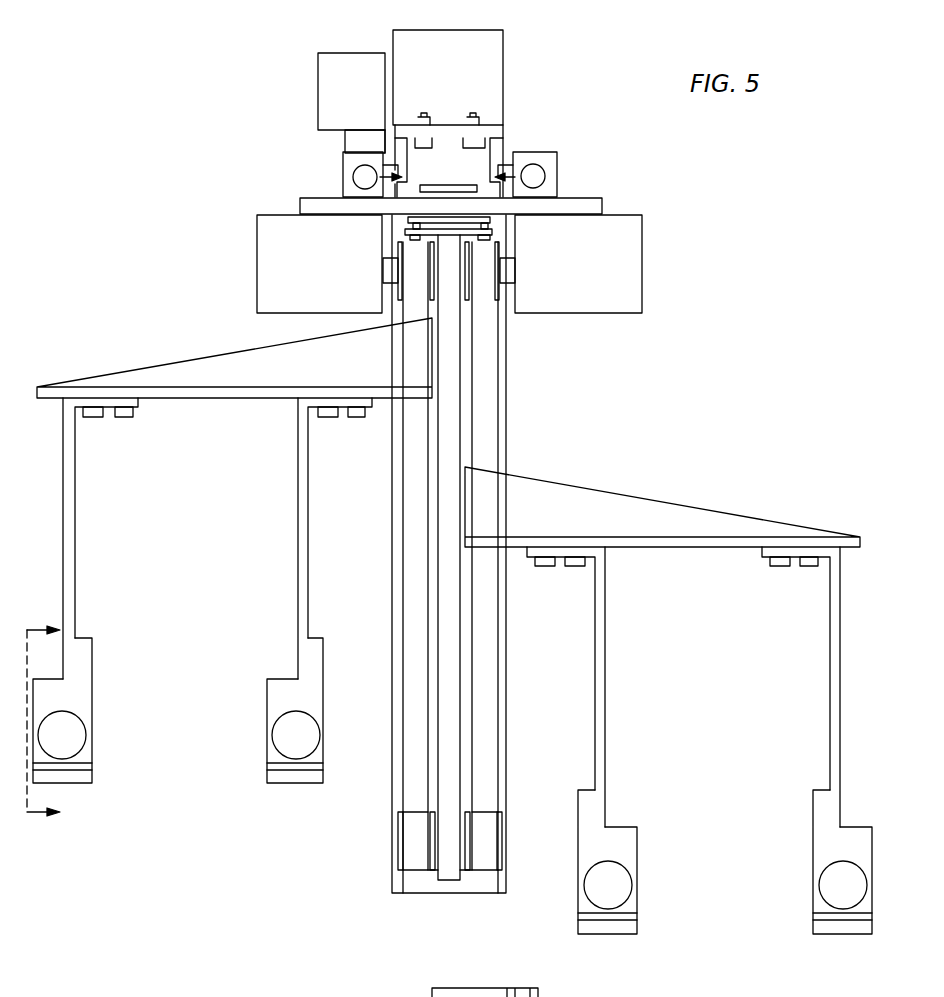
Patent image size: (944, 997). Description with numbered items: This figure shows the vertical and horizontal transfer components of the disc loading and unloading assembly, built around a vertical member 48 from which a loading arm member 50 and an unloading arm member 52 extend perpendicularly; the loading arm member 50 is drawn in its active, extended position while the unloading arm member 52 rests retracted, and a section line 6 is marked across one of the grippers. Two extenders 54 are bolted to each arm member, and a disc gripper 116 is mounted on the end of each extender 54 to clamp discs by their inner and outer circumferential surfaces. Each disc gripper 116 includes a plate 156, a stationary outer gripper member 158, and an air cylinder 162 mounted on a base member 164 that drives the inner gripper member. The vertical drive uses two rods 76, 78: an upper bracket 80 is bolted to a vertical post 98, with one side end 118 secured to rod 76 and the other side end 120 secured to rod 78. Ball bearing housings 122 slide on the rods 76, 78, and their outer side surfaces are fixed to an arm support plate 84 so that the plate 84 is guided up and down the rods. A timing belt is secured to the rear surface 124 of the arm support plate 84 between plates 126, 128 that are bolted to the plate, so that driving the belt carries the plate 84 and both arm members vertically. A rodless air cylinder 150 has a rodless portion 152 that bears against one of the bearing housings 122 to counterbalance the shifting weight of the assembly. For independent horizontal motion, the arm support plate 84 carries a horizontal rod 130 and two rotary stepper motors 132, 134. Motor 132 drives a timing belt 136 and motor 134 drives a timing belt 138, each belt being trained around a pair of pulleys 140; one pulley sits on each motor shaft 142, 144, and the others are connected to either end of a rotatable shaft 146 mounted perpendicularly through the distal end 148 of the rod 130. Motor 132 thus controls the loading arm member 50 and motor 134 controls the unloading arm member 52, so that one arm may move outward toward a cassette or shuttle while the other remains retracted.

The vertical member 48 is at (530, 40).
The loading arm member 50 is at (550, 490).
The unloading arm member 52 is at (165, 378).
The extenders 54 is at (66, 515).
The rod 76 is at (362, 178).
The rod 78 is at (540, 173).
The upper bracket 80 is at (492, 137).
The arm support plate 84 is at (590, 208).
The vertical post 98 is at (495, 87).
The disc gripper 116 is at (100, 715).
The side end 118 is at (400, 170).
The side end 120 is at (497, 177).
The ball bearing housings 122 is at (352, 170).
The rear surface 124 is at (590, 220).
The plate 126 is at (470, 222).
The plate 128 is at (490, 232).
The horizontal rod 130 is at (452, 790).
The rotary stepper motor 132 is at (595, 305).
The rotary stepper motor 134 is at (270, 253).
The timing belt 136 is at (485, 415).
The timing belt 138 is at (418, 832).
The pulleys 140 is at (398, 297).
The motor shaft 142 is at (510, 272).
The motor shaft 144 is at (393, 272).
The rotatable shaft 146 is at (465, 852).
The distal end 148 is at (440, 885).
The rodless air cylinder 150 is at (330, 90).
The rodless portion 152 is at (373, 142).
The plate 156 is at (635, 922).
The stationary outer gripper member 158 is at (598, 927).
The air cylinder 162 is at (622, 885).
The base member 164 is at (615, 838).
The section line 6- 6 is at (42, 725).